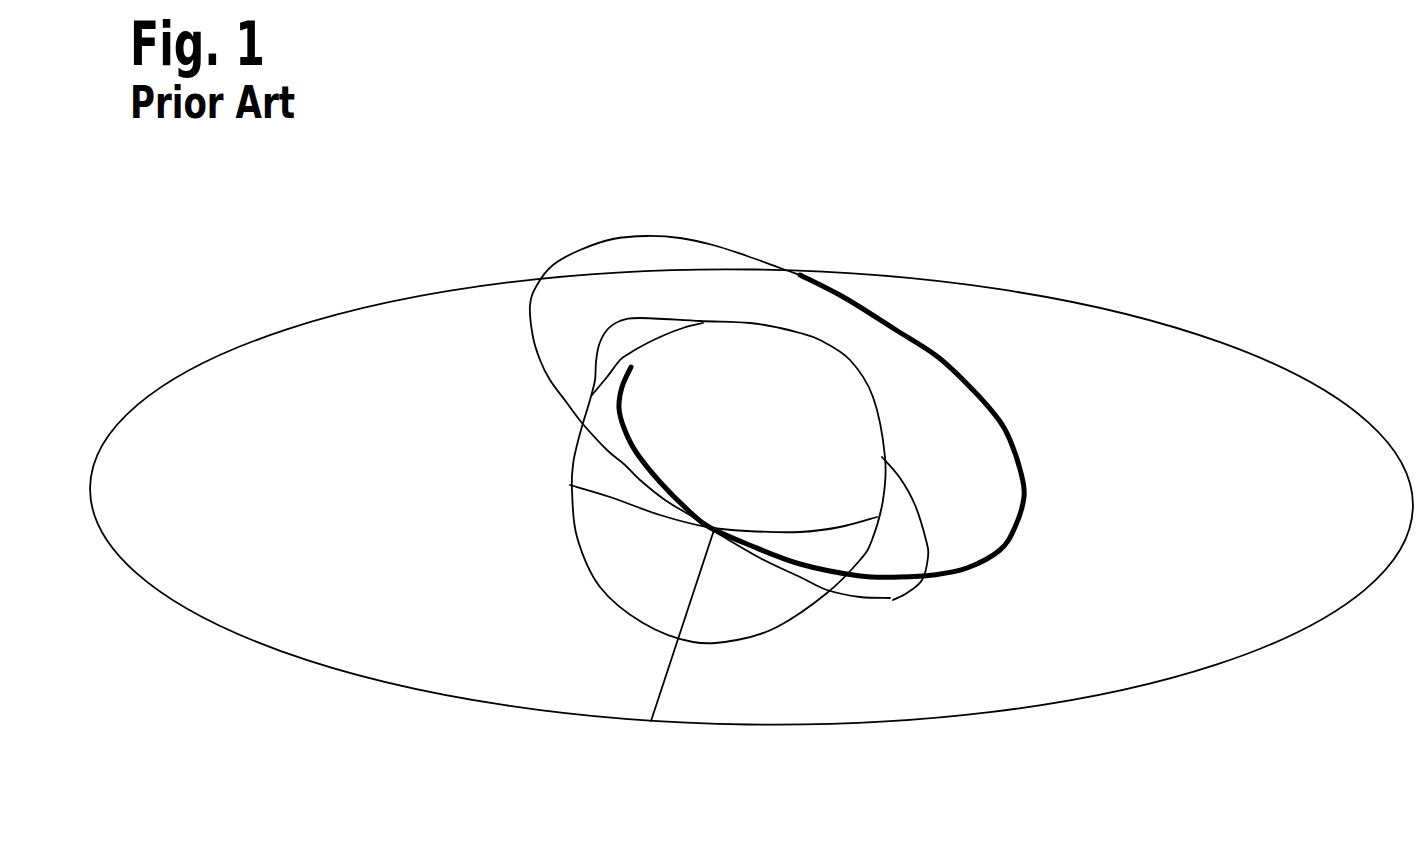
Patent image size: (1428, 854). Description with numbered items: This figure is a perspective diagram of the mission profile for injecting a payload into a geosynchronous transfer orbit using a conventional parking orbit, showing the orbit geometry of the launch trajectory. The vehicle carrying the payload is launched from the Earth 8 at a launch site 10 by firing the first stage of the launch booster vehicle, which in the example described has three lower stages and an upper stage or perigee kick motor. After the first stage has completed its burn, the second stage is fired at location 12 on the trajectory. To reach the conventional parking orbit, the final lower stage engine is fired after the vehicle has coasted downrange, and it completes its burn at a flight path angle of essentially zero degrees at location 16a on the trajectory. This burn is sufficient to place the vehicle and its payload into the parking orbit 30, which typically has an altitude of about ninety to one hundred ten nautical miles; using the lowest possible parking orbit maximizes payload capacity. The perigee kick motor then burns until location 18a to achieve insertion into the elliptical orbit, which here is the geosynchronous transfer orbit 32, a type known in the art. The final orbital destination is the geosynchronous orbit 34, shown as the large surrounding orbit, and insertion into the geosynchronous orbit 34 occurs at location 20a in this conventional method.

The Earth 8 is at (592, 524).
The launch site 10 is at (629, 366).
The location 12 is at (623, 401).
The location 16a is at (628, 440).
The location 18a is at (707, 527).
The location 20a is at (780, 328).
The parking orbit 30 is at (893, 600).
The geosynchronous transfer orbit 32 is at (921, 348).
The geosynchronous orbit 34 is at (313, 317).